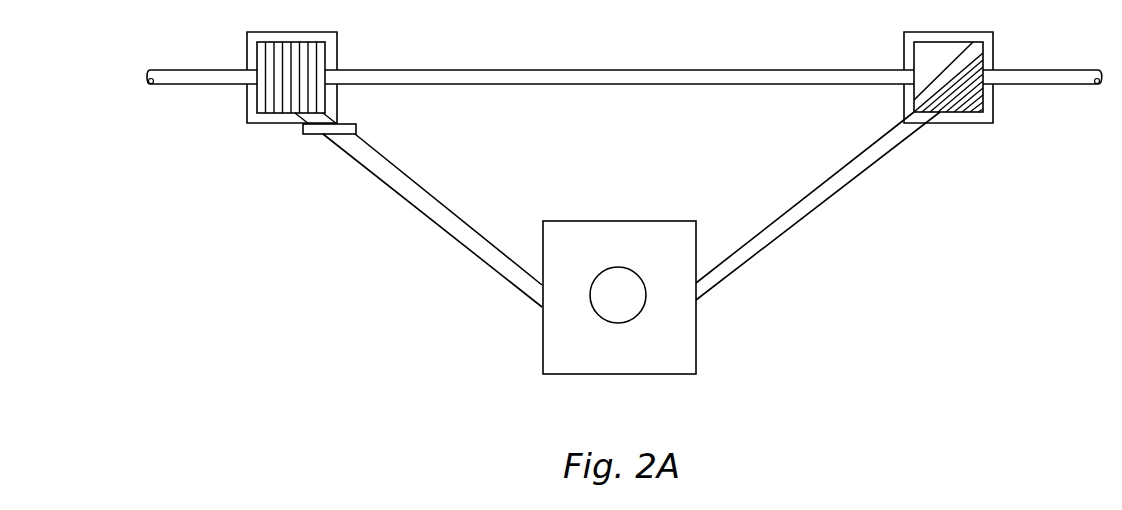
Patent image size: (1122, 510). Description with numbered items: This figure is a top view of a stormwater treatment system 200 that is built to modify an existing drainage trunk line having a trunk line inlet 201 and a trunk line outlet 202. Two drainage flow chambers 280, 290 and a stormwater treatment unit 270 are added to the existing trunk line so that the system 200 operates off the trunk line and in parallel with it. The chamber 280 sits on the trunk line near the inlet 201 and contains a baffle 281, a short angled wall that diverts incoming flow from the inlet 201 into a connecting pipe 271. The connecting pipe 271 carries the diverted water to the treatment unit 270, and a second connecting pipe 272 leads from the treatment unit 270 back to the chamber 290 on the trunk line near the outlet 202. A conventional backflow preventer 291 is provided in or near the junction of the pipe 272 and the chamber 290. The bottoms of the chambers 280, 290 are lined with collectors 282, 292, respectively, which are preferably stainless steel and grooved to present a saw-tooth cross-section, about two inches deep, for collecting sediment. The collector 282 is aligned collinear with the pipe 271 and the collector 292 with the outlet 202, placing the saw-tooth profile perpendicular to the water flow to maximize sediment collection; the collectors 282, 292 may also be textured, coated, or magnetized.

The stormwater treatment system 200 is at (637, 425).
The trunk line inlet 201 is at (1030, 71).
The trunk line outlet 202 is at (216, 70).
The stormwater treatment unit 270 is at (608, 221).
The connecting pipe 271 is at (812, 213).
The connecting pipe 272 is at (426, 216).
The drainage flow chamber 280 is at (950, 66).
The baffle 281 is at (943, 72).
The collector 282 is at (979, 107).
The drainage flow chamber 290 is at (317, 87).
The backflow preventer 291 is at (310, 135).
The collector 292 is at (324, 58).